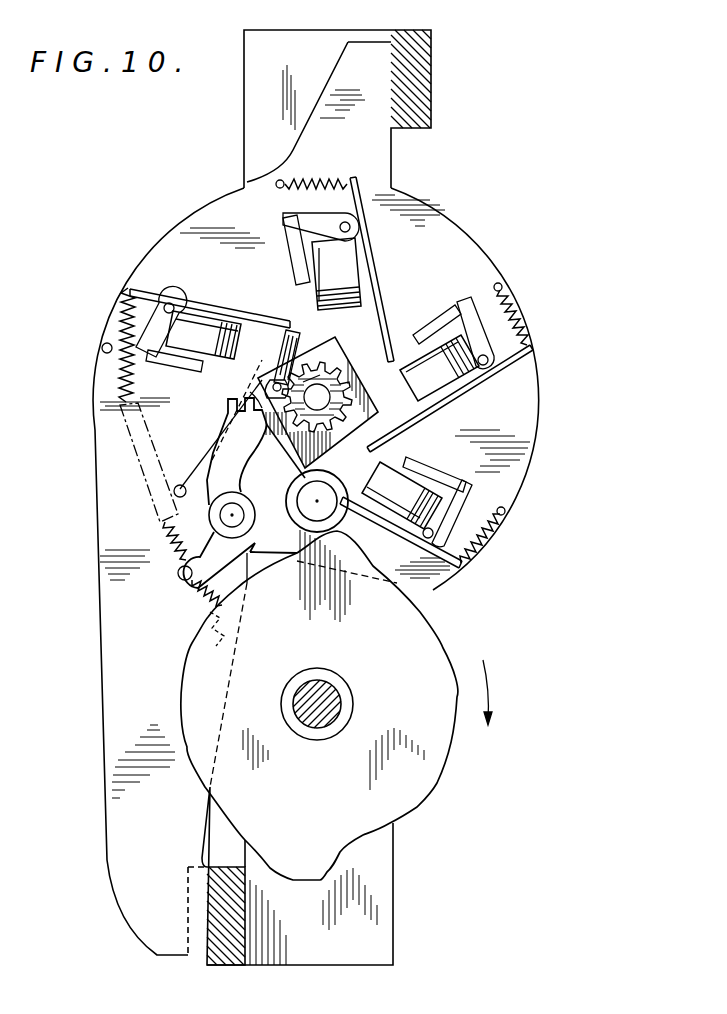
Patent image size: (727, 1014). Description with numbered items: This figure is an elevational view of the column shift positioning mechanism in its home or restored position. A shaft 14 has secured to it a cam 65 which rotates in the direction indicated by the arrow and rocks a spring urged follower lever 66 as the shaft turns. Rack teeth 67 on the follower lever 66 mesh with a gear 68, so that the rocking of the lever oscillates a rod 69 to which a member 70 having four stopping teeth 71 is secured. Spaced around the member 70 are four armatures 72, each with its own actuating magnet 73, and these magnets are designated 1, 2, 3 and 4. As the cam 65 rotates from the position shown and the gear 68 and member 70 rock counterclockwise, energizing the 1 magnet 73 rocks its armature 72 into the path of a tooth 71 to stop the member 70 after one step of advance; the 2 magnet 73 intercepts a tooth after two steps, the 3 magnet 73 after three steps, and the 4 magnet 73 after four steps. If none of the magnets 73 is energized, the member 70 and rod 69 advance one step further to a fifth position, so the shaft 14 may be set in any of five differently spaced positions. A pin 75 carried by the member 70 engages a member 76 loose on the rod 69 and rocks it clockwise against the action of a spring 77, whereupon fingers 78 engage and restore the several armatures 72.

The first magnet designation 1 is at (193, 341).
The second magnet designation 2 is at (336, 274).
The third magnet designation 3 is at (439, 368).
The fourth magnet designation 4 is at (402, 495).
The shaft 14 is at (330, 708).
The cam 65 is at (428, 772).
The follower lever 66 is at (241, 474).
The rack teeth 67 is at (252, 394).
The gear 68 is at (338, 343).
The rod 69 is at (325, 395).
The member 70 is at (282, 352).
The stopping teeth 71 is at (330, 342).
The armature 72 is at (245, 310).
The actuating magnet 73 is at (192, 306).
The pin 75 is at (268, 392).
The member 76 is at (218, 440).
The spring 77 is at (203, 592).
The fingers 78 is at (280, 328).